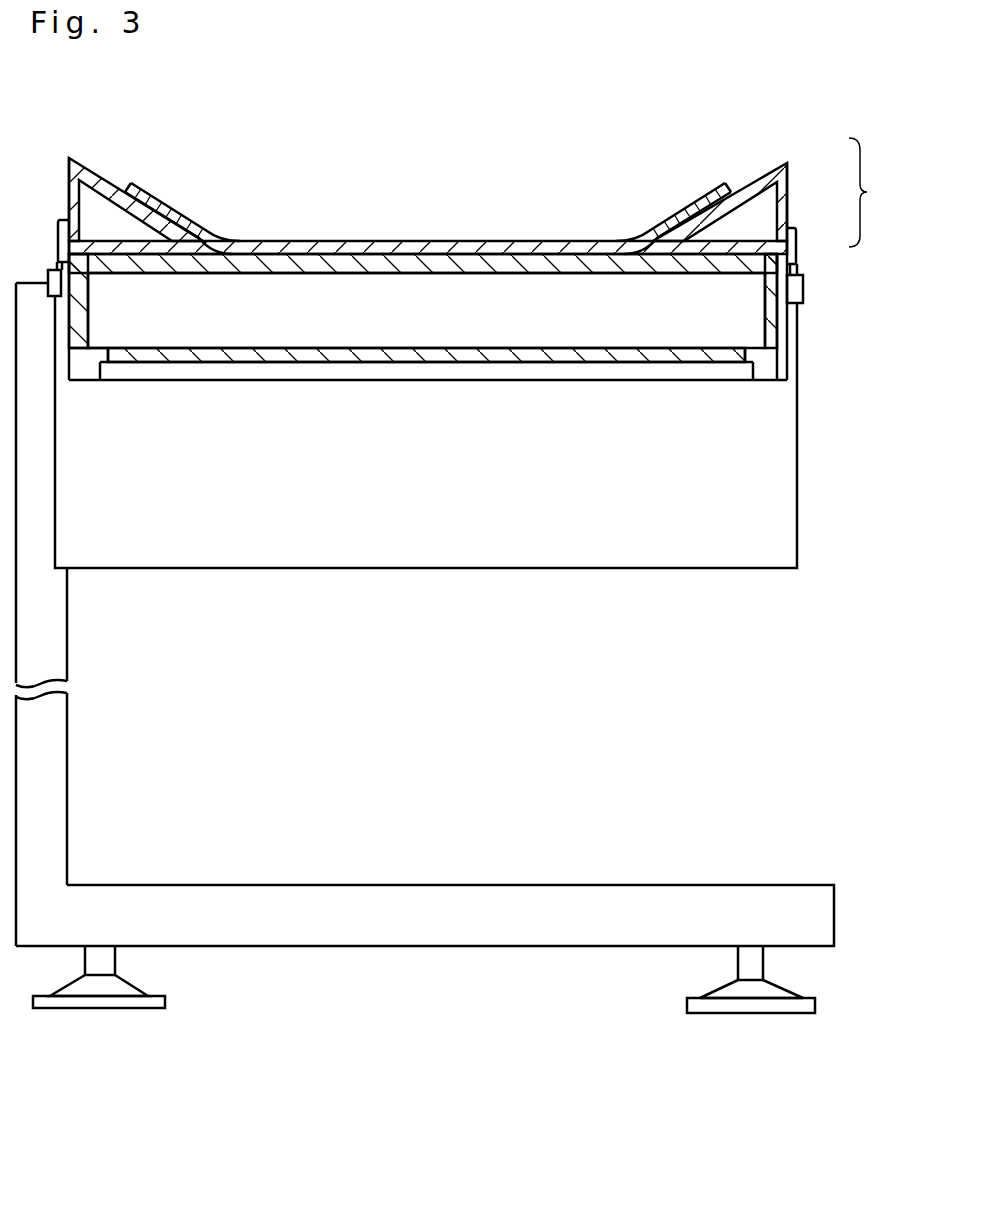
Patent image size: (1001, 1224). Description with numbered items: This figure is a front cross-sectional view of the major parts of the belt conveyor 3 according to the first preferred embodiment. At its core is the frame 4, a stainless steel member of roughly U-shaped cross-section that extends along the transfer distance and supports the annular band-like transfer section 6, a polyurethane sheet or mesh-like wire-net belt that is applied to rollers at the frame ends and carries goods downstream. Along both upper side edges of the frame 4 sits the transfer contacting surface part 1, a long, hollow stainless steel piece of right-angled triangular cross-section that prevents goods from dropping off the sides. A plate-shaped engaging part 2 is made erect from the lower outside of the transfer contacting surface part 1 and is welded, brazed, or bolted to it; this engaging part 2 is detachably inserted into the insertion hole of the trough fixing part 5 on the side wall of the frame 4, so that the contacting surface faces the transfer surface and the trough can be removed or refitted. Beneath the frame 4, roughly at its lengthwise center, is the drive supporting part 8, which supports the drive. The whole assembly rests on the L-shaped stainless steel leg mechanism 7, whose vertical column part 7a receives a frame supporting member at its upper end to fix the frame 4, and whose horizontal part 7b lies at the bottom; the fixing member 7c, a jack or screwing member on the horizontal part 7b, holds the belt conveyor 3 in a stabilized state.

The transfer contacting surface part 1 is at (790, 194).
The plate-shaped engaging part 2 is at (797, 242).
The belt conveyor 3 is at (536, 171).
The frame 4 is at (783, 322).
The trough fixing part 5 is at (804, 296).
The transfer section 6 is at (328, 352).
The leg mechanism 7 is at (536, 753).
The vertical column part 7a is at (52, 735).
The horizontal part 7b is at (412, 898).
The fixing member 7c is at (805, 1005).
The drive supporting part 8 is at (745, 485).